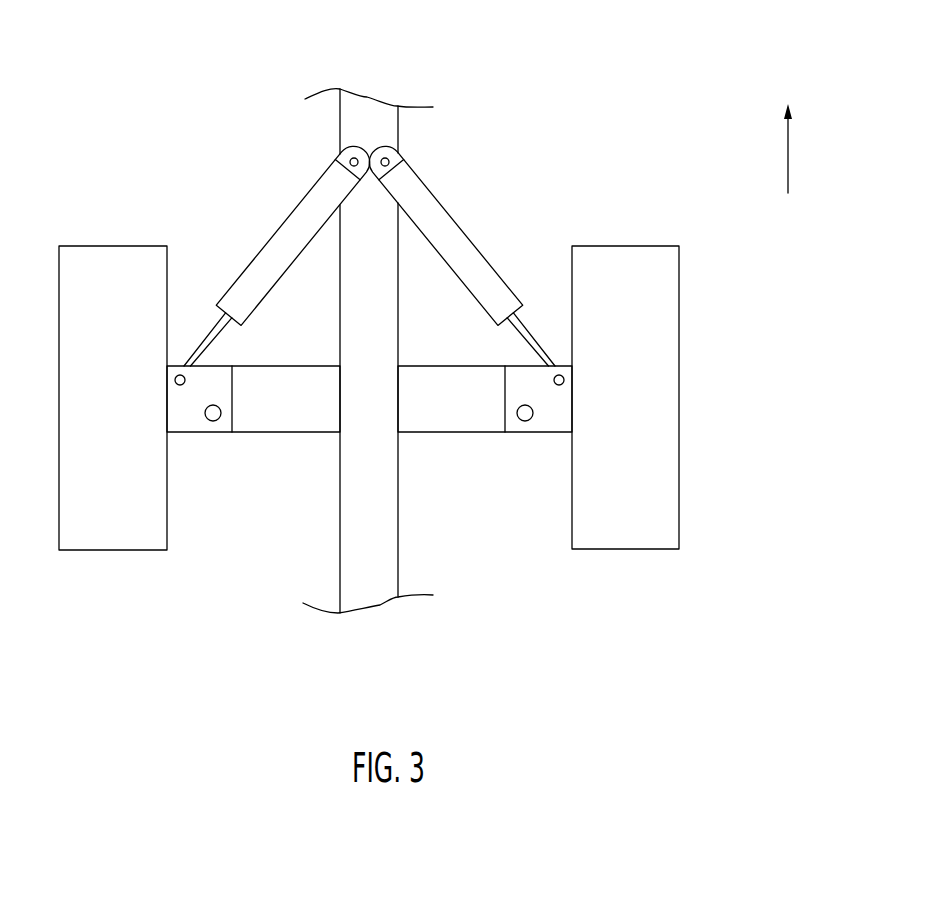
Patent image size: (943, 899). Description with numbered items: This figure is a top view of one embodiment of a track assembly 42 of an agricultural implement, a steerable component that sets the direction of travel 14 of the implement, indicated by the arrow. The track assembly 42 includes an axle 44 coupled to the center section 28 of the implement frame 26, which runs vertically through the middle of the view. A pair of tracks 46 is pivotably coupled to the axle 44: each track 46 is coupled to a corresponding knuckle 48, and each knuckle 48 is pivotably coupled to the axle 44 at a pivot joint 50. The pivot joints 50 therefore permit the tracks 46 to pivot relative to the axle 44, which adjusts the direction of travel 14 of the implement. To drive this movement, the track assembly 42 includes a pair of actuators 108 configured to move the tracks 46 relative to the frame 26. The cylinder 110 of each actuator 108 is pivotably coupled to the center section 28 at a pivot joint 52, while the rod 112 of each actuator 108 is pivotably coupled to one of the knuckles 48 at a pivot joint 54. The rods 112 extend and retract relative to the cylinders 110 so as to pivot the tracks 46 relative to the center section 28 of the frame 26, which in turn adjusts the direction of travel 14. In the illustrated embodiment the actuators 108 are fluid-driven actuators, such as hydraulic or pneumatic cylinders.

The direction of travel 14 is at (788, 150).
The frame 26 is at (379, 651).
The center section 28 is at (340, 142).
The track assembly 42 is at (108, 106).
The axle 44 is at (422, 366).
The tracks 46 is at (99, 538).
The knuckle 48 is at (188, 433).
The pivot joint 50 is at (216, 415).
The pivot joint 52 is at (354, 157).
The pivot joint 54 is at (175, 381).
The actuator 108 is at (364, 256).
The cylinder 110 is at (300, 202).
The rod 112 is at (211, 335).